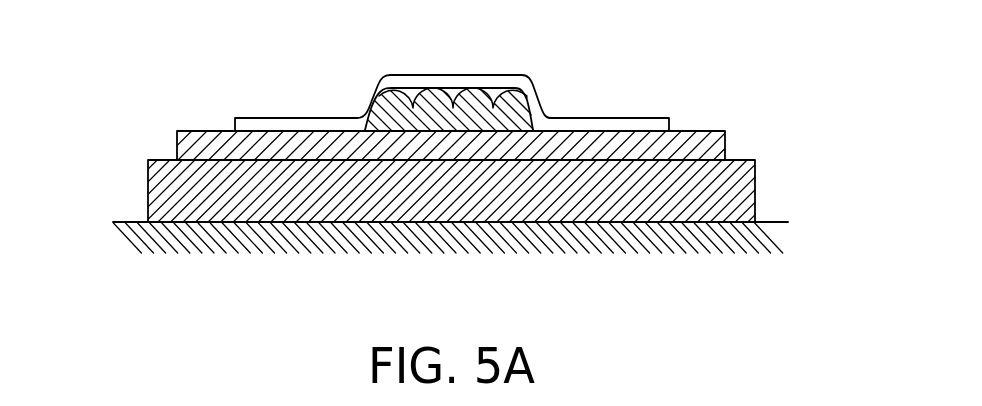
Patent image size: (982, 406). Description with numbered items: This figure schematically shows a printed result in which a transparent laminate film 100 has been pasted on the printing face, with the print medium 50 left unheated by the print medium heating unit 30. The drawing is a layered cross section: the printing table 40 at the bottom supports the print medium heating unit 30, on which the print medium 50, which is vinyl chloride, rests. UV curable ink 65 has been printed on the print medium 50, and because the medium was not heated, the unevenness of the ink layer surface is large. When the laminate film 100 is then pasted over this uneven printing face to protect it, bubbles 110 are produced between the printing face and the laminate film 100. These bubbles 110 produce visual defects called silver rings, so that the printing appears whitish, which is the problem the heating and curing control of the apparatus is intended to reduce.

The print medium heating unit 30 is at (756, 163).
The printing table 40 is at (632, 246).
The print medium 50 is at (700, 137).
The UV curable ink 65 is at (366, 104).
The laminate film 100 is at (573, 130).
The bubbles 110 is at (491, 104).